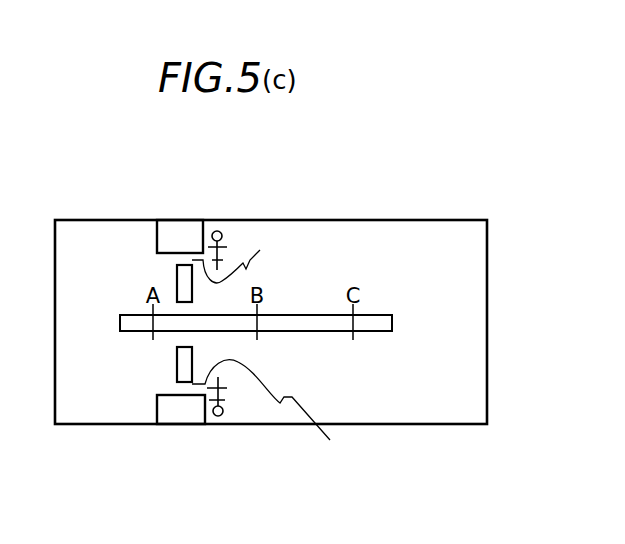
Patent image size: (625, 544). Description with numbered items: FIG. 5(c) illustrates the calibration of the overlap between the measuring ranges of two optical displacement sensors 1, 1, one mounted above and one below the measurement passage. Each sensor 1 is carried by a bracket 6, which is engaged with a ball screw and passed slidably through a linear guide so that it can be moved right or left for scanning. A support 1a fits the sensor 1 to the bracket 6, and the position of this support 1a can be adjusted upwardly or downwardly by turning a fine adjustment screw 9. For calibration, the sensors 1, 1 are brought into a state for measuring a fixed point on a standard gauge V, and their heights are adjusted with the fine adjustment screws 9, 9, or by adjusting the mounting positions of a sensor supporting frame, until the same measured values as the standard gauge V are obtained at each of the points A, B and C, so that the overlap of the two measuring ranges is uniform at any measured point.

The optical displacement sensor 1 is at (177, 275).
The support 1a is at (273, 353).
The bracket 6 is at (182, 227).
The fine adjustment screw 9 is at (223, 235).
The standard gauge V is at (386, 315).